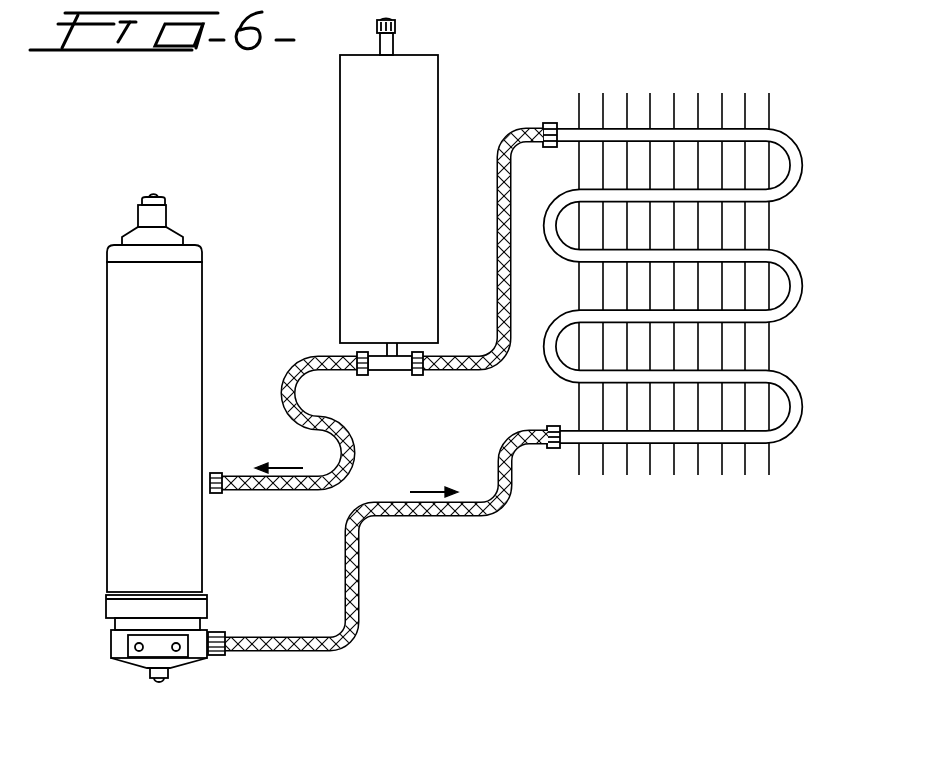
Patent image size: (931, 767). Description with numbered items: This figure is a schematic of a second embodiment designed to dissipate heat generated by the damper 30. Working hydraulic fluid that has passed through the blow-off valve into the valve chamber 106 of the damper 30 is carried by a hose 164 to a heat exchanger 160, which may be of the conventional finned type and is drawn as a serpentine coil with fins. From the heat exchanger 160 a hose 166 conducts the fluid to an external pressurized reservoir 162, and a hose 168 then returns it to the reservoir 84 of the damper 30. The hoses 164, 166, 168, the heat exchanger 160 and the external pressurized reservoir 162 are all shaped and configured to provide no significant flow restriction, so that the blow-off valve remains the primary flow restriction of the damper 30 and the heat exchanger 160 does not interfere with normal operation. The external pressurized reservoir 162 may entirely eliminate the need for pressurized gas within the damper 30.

The damper 30 is at (170, 372).
The external pressurized reservoir 162 is at (410, 177).
The heat exchanger 160 is at (775, 235).
The hose 164 is at (360, 593).
The hose 166 is at (470, 370).
The hose 168 is at (240, 473).
The reservoir 84 is at (209, 494).
The valve chamber 106 is at (210, 656).